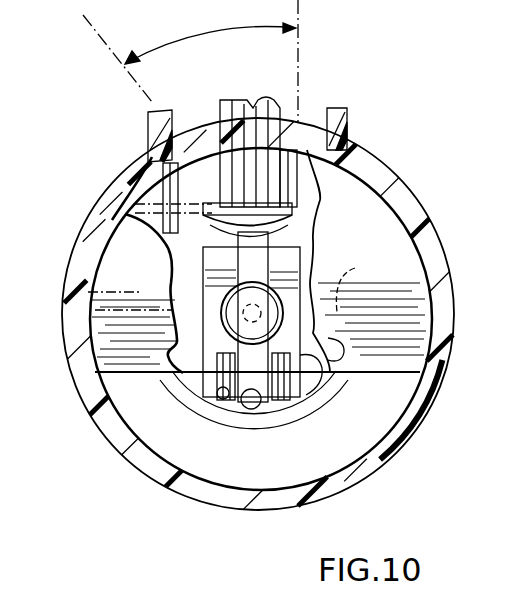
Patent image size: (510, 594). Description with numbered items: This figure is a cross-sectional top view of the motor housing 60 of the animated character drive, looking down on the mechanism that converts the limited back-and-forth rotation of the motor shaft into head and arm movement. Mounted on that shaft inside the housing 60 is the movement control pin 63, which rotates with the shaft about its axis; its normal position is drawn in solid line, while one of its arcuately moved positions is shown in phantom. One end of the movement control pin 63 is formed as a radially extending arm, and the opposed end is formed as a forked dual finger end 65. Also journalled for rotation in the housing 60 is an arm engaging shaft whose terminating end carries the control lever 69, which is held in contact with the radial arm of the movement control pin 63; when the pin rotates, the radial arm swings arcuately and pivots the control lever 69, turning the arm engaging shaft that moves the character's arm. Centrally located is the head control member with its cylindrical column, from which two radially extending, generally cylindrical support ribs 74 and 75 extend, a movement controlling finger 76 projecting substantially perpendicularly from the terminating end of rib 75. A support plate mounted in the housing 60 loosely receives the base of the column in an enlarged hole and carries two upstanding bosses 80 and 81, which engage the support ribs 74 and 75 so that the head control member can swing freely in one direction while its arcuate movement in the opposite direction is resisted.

The housing 60 is at (428, 240).
The movement control pin 63 is at (167, 374).
The forked dual finger end 65 is at (350, 272).
The control lever 69 is at (228, 192).
The support rib 74 is at (312, 240).
The support rib 75 is at (241, 413).
The movement controlling finger 76 is at (328, 418).
The upstanding boss 80 is at (342, 348).
The upstanding boss 81 is at (168, 250).